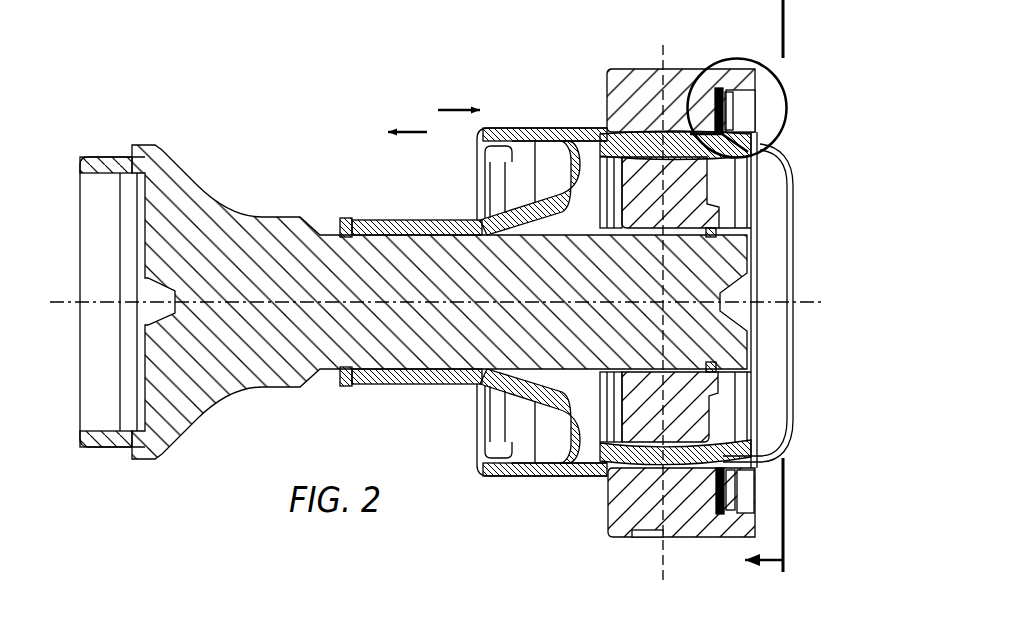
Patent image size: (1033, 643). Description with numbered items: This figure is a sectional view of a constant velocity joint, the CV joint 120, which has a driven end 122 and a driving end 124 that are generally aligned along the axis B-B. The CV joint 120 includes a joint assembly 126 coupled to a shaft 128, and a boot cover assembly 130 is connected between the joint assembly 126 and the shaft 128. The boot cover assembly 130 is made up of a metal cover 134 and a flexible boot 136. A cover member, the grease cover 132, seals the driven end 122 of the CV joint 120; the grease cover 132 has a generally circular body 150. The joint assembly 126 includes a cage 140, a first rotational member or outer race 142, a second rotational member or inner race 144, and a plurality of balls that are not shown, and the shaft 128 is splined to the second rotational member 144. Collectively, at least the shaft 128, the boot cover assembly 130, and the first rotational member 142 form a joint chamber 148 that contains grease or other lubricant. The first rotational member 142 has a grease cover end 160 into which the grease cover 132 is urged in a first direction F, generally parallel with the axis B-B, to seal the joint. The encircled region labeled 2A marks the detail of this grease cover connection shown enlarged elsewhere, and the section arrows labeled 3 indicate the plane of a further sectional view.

The CV joint 120 is at (460, 61).
The driven end 122 is at (137, 127).
The driving end 124 is at (698, 548).
The joint assembly 126 is at (740, 401).
The shaft 128 is at (263, 235).
The boot cover assembly 130 is at (512, 496).
The grease cover 132 is at (797, 224).
The metal cover 134 is at (563, 474).
The flexible boot 136 is at (437, 382).
The cage 140 is at (723, 202).
The first rotational member 142 is at (628, 82).
The second rotational member 144 is at (683, 408).
The joint chamber 148 is at (583, 180).
The circular body 150 is at (793, 358).
The grease cover end 160 is at (766, 525).
The detail view circle 2A is at (735, 58).
The section line 3 is at (778, 286).